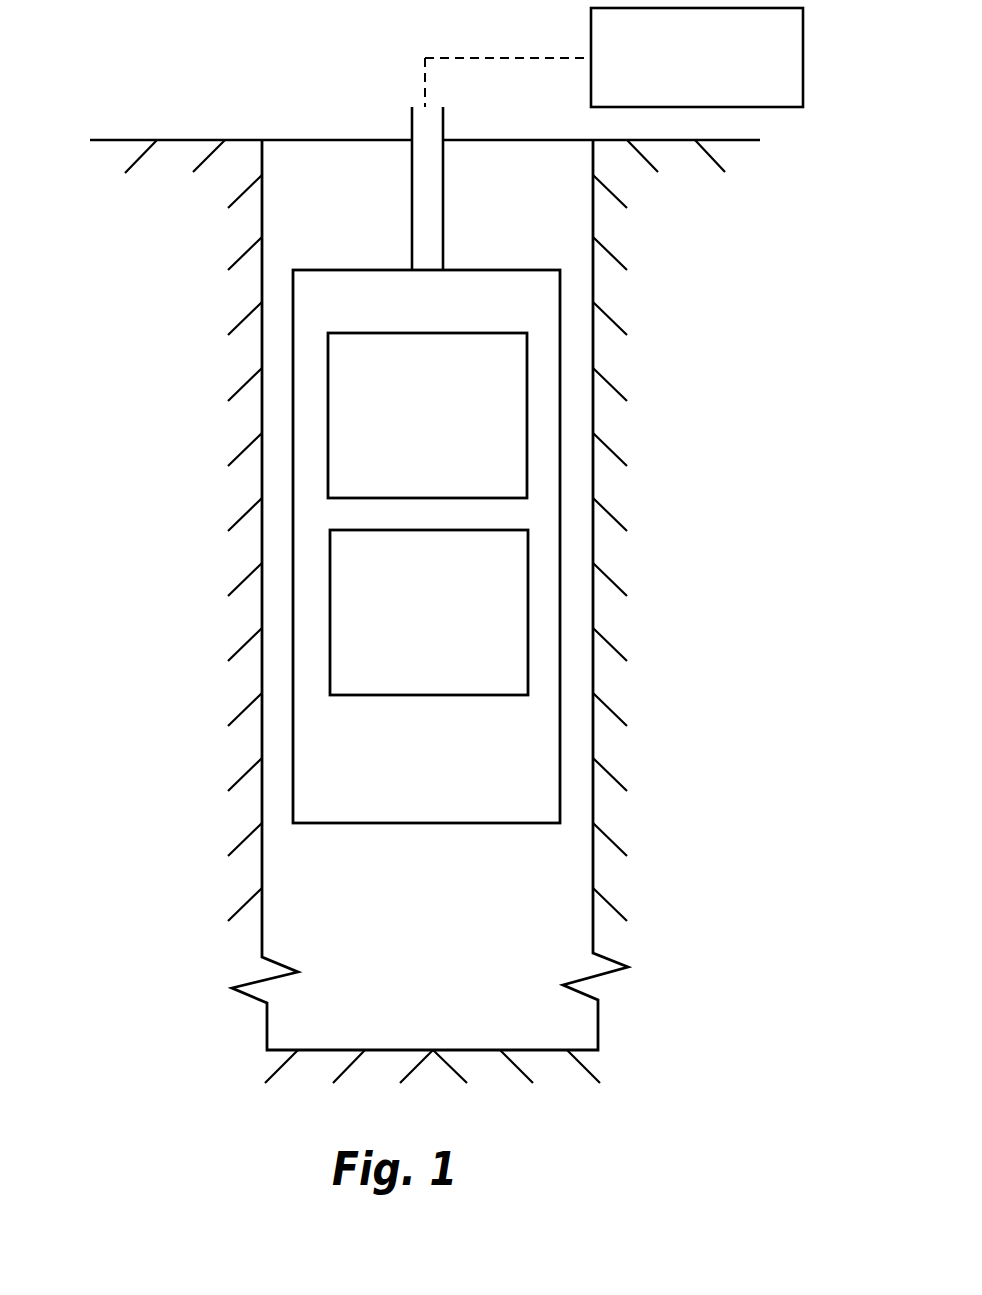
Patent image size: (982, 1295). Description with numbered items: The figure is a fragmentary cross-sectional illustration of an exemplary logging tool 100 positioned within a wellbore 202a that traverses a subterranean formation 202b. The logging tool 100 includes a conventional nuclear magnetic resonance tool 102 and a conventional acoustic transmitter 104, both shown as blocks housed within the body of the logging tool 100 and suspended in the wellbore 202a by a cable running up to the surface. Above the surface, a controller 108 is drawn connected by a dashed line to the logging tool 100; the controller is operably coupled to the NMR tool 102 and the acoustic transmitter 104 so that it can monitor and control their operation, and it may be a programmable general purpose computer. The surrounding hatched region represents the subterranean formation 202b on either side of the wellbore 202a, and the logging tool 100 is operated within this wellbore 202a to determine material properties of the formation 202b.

The logging tool 100 is at (426, 546).
The nuclear magnetic resonance tool 102 is at (427, 415).
The acoustic transmitter 104 is at (429, 612).
The controller 108 is at (614, 57).
The wellbore 202a is at (262, 415).
The subterranean formation 202b is at (356, 629).